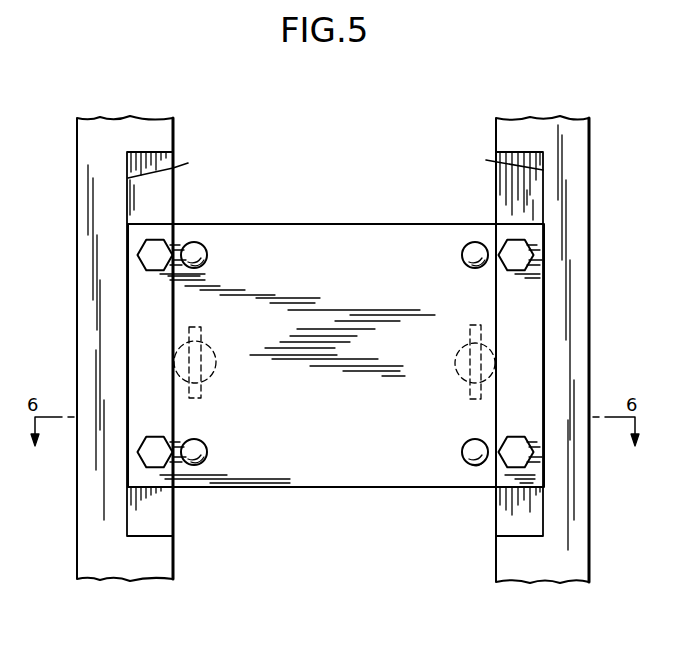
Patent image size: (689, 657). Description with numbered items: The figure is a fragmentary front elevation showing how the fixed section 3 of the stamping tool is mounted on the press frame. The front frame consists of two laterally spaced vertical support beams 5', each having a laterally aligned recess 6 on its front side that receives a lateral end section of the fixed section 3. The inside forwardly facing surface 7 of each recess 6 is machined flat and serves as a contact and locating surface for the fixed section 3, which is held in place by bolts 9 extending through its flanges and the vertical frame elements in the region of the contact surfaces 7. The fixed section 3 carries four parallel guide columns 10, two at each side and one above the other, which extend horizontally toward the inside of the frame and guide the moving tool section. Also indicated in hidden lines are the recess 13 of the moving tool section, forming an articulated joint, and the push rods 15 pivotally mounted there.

The vertical support beam 5' is at (333, 324).
The fixed section of the tool 3 is at (326, 226).
The recess 6 is at (335, 164).
The inside forwardly facing surface 7 is at (163, 204).
The bolt 9 is at (153, 262).
The guide column 10 is at (197, 255).
The recess 13 is at (204, 397).
The push rod 15 is at (208, 356).